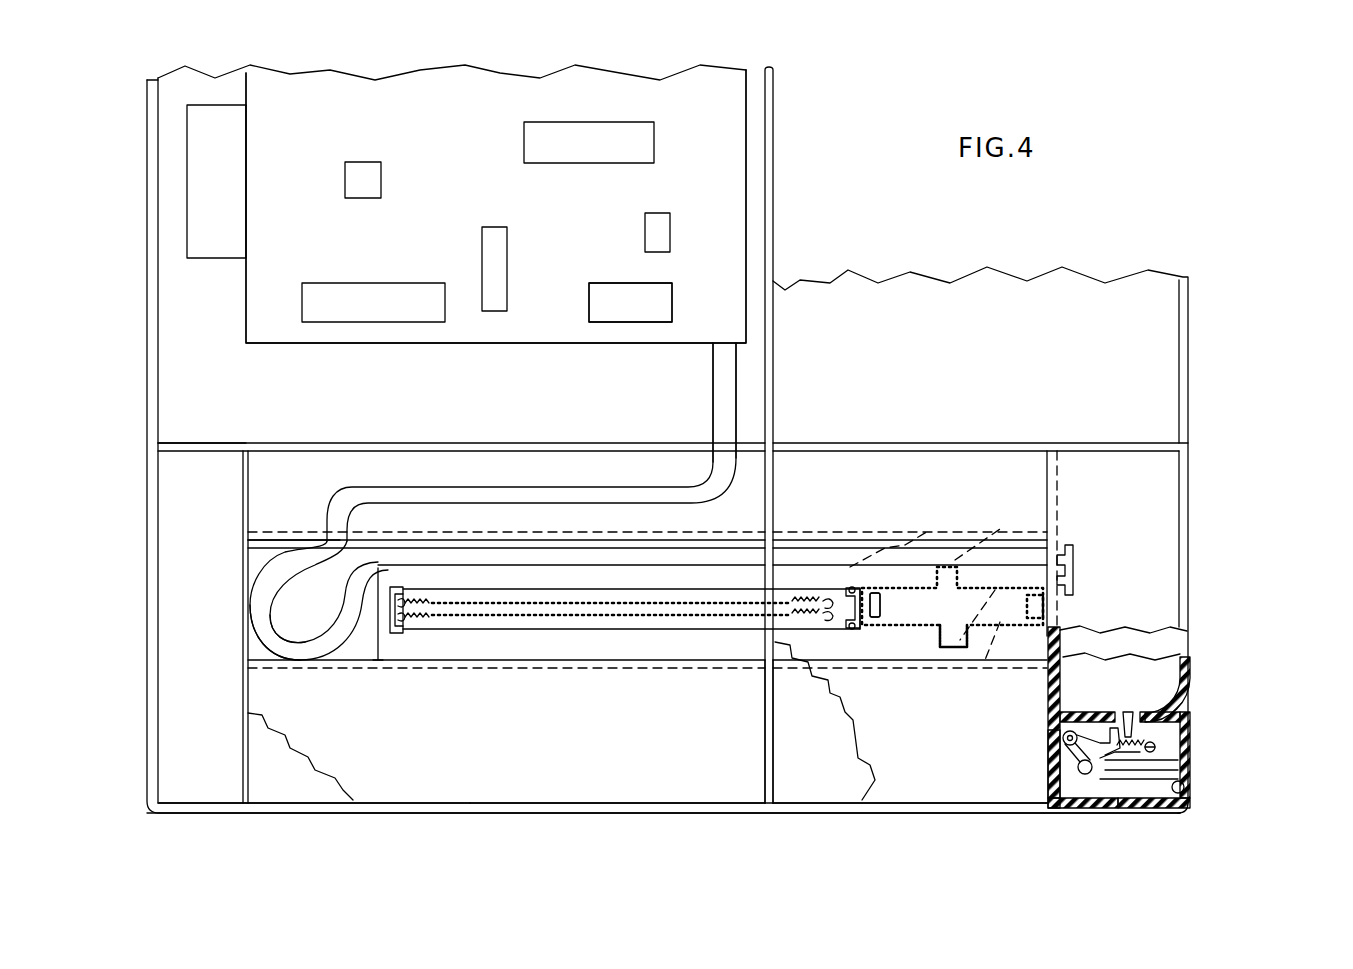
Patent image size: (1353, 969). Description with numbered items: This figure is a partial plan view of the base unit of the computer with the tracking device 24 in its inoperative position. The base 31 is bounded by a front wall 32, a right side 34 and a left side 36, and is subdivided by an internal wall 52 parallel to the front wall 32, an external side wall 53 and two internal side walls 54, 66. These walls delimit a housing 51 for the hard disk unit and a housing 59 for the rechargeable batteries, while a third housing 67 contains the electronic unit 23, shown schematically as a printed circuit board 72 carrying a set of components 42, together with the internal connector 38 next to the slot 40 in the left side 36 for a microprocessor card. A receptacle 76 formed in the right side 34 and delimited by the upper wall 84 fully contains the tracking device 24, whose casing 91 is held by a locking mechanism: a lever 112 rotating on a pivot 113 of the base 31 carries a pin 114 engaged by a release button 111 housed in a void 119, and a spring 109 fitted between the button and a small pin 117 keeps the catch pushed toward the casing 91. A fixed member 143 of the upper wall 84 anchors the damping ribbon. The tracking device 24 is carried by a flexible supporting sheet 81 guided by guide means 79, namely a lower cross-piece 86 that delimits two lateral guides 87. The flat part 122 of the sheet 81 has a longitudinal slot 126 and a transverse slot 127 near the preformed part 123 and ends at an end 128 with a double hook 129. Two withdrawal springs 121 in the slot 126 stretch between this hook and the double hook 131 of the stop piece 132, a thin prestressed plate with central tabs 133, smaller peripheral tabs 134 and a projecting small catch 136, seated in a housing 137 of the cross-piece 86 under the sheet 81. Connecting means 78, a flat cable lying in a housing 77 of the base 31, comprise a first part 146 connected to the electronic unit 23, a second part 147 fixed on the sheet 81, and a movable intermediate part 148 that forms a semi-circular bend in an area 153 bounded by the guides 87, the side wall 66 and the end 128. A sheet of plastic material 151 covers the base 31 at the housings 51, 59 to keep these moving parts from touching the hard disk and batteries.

The electronic unit 23 is at (250, 380).
The tracking device 24 is at (1203, 673).
The base 31 is at (823, 307).
The front wall 32 is at (460, 806).
The right side 34 is at (1185, 352).
The left side 36 is at (150, 665).
The internal connector 38 is at (222, 250).
The slot 40 is at (143, 240).
The set of components 42 is at (335, 135).
The housing 51 is at (920, 800).
The internal wall 52 is at (447, 443).
The external side wall 53 is at (1055, 710).
The internal side wall 54 is at (775, 695).
The housing 59 is at (590, 797).
The internal side wall 66 is at (243, 703).
The third housing 67 is at (160, 345).
The printed circuit board 72 is at (528, 305).
The receptacle 76 is at (1190, 713).
The housing 77 is at (322, 532).
The connecting means 78 is at (543, 477).
The guide means 79 is at (442, 673).
The supporting member 81 is at (367, 648).
The upper wall 84 is at (1170, 492).
The lower cross-piece 86 is at (262, 580).
The lateral guides 87 is at (600, 655).
The casing 91 is at (1177, 645).
The spring 109 is at (1147, 807).
The release button 111 is at (1190, 772).
The lever 112 is at (1053, 773).
The pivot 113 is at (1065, 742).
The pin 114 is at (1103, 807).
The small pin 117 is at (1190, 757).
The void 119 is at (1187, 810).
The spring withdrawal means 121 is at (437, 607).
The flat part 122 is at (683, 640).
The preformed part 123 is at (857, 667).
The longitudinal slot 126 is at (527, 637).
The transverse slot 127 is at (877, 620).
The end 128 is at (370, 560).
The double hook 129 is at (400, 585).
The double hook 131 is at (825, 598).
The stop piece 132 is at (950, 530).
The central tabs 133 is at (1020, 510).
The peripheral tabs 134 is at (858, 500).
The small catch 136 is at (1050, 600).
The housing 137 is at (1003, 630).
The fixed member 143 is at (1078, 563).
The first part 146 is at (727, 390).
The second part 147 is at (1047, 550).
The intermediate part 148 is at (262, 620).
The sheet of plastic material 151 is at (303, 777).
The area 153 is at (305, 622).